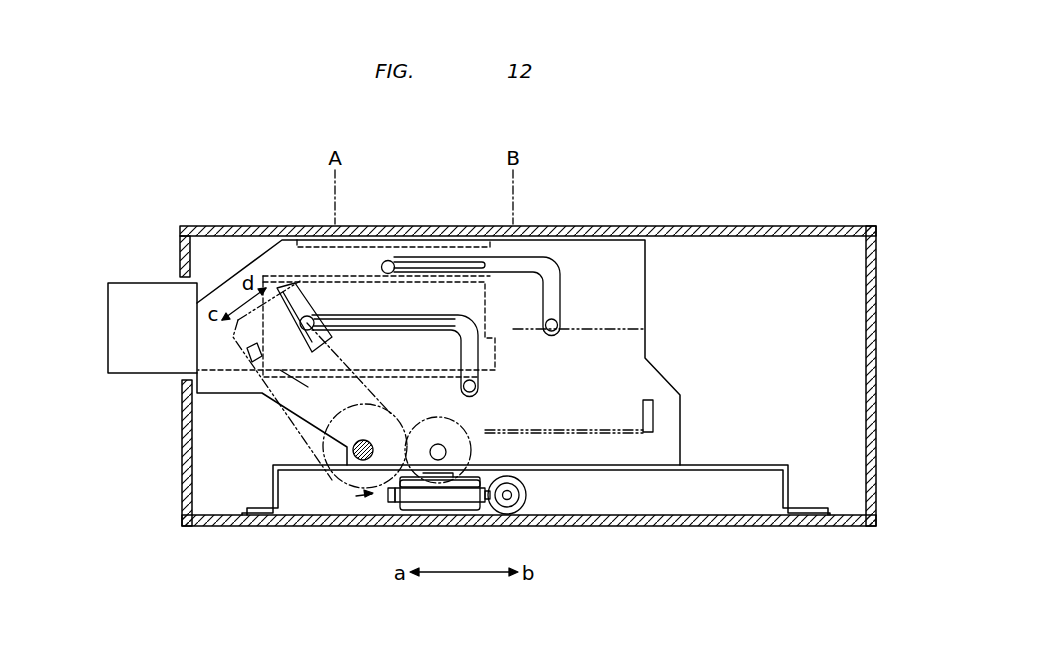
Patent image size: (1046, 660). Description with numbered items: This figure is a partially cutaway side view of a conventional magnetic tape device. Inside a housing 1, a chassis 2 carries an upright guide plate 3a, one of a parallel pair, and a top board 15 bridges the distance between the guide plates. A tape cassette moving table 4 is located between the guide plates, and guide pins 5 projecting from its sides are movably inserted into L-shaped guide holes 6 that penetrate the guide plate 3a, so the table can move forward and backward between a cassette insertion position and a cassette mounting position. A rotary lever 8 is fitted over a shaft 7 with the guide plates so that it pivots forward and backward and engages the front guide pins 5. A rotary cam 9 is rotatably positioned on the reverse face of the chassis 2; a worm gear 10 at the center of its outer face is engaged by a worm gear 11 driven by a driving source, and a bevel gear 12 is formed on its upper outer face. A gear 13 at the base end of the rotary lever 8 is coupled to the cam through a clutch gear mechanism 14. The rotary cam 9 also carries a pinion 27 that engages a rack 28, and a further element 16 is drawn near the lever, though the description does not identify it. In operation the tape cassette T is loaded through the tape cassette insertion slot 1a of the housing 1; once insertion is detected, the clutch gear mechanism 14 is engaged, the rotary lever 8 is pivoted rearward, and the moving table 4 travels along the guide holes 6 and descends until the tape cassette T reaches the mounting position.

The housing 1 is at (713, 226).
The tape cassette insertion slot 1a is at (181, 276).
The tape cassette T is at (133, 358).
The chassis 2 is at (743, 464).
The guide plate 3a is at (626, 293).
The tape cassette moving table 4 is at (503, 363).
The guide pins 5 is at (393, 274).
The L-shaped guide holes 6 is at (477, 325).
The shaft 7 is at (364, 440).
The rotary lever 8 is at (294, 427).
The rotary cam 9 is at (356, 496).
The worm gear 10 is at (388, 494).
The worm gear 11 is at (528, 493).
The bevel gear 12 is at (484, 463).
The gear 13 is at (394, 414).
The clutch gear mechanism 14 is at (462, 425).
The top board 15 is at (404, 243).
The head unit 16 is at (315, 358).
The pinion 27 is at (282, 270).
The rack 28 is at (333, 275).